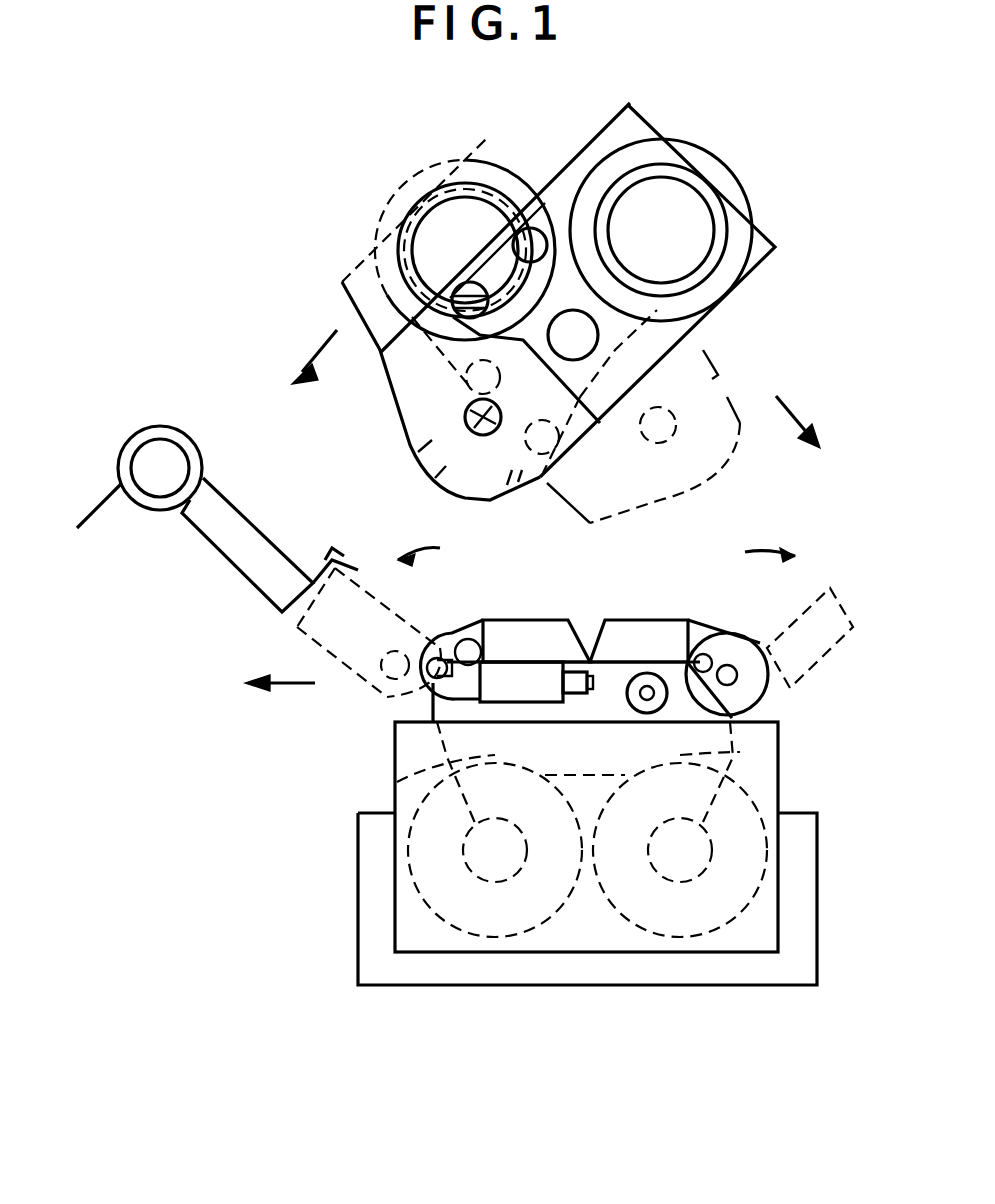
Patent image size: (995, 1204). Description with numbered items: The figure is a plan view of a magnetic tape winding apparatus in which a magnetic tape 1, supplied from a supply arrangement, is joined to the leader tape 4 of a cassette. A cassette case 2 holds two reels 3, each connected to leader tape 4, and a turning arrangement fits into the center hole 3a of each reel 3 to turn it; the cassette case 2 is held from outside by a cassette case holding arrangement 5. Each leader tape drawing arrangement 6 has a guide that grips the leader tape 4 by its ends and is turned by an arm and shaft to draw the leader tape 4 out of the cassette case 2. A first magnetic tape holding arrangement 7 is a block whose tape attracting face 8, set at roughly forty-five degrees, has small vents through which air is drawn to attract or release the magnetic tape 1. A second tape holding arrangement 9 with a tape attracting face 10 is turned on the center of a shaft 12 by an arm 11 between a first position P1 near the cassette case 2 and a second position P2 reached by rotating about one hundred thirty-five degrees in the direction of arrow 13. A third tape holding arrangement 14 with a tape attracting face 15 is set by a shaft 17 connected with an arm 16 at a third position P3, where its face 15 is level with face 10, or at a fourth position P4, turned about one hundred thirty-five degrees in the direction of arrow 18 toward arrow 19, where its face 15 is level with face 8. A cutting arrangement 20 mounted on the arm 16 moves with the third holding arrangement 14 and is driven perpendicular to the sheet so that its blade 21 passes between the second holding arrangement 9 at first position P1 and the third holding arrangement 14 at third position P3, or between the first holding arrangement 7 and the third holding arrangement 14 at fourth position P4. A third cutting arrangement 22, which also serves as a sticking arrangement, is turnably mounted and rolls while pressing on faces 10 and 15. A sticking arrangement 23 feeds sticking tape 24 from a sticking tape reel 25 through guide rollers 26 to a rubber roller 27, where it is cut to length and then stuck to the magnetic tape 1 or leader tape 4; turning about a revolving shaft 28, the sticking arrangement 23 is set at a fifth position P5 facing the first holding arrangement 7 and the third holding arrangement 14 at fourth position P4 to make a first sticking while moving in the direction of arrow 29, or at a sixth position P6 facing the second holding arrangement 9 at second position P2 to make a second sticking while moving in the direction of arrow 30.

The magnetic tape 1 is at (95, 500).
The cassette case 2 is at (605, 930).
The reel 3 is at (432, 903).
The center hole 3a is at (470, 853).
The leader tape 4 is at (397, 782).
The cassette case holding arrangement 5 is at (380, 975).
The leader tape drawing arrangement 6 is at (455, 690).
The first magnetic tape holding arrangement 7 is at (230, 548).
The tape attracting face 8 is at (258, 525).
The second tape holding arrangement 9 is at (700, 625).
The tape attracting face 10 is at (675, 625).
The arm 11 is at (715, 648).
The shaft 12 is at (740, 680).
The arrow 13 is at (762, 548).
The third tape holding arrangement 14 is at (538, 620).
The tape attracting face 15 is at (490, 640).
The arm 16 is at (447, 640).
The shaft 17 is at (485, 680).
The arrow 18 is at (416, 534).
The arrow 19 is at (268, 686).
The cutting arrangement 20 is at (575, 690).
The blade 21 is at (595, 640).
The third cutting arrangement 22 is at (645, 710).
The sticking arrangement 23 is at (580, 130).
The sticking tape 24 is at (525, 180).
The sticking tape reel 25 is at (705, 150).
The guide rollers 26 is at (470, 300).
The rubber roller 27 is at (410, 470).
The revolving shaft 28 is at (590, 335).
The arrow 29 is at (330, 340).
The arrow 30 is at (820, 390).
The first position P1 is at (645, 620).
The second position P2 is at (835, 590).
The third position P3 is at (580, 620).
The fourth position P4 is at (300, 642).
The fifth position P5 is at (395, 395).
The sixth position P6 is at (735, 372).